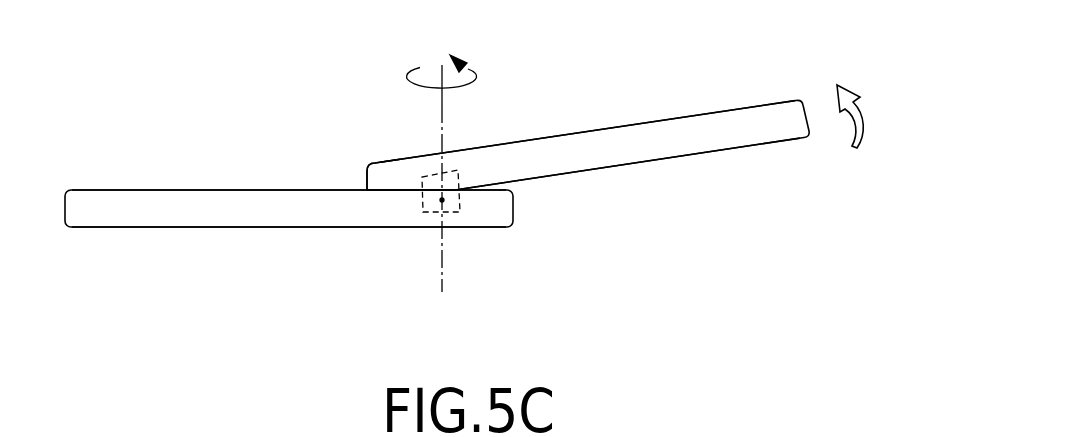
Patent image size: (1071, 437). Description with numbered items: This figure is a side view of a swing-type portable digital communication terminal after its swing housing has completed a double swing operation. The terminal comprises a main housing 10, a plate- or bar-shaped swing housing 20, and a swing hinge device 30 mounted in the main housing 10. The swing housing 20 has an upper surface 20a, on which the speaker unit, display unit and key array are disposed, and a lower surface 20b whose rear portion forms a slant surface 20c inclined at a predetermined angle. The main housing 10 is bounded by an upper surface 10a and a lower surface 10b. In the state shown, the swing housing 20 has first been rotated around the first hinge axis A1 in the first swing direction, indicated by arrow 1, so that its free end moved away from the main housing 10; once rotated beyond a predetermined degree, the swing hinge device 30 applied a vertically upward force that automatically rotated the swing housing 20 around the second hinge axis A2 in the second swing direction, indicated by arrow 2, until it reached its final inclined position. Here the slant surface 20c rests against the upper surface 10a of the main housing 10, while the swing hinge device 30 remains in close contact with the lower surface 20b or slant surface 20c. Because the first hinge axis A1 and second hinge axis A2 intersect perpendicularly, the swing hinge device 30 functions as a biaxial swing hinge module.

The main housing 10 is at (160, 244).
The upper surface of the main housing 10a is at (138, 190).
The lower surface of first body 10b is at (245, 227).
The swing housing 20 is at (753, 94).
The upper surface of the swing housing 20a is at (653, 122).
The lower surface of the swing housing 20b is at (706, 152).
The slant surface 20c is at (397, 189).
The swing hinge device 30 is at (445, 201).
The first hinge axis A1 is at (442, 273).
The second hinge axis A2 is at (405, 200).
The first swing direction 1 is at (477, 79).
The second swing direction 2 is at (866, 120).